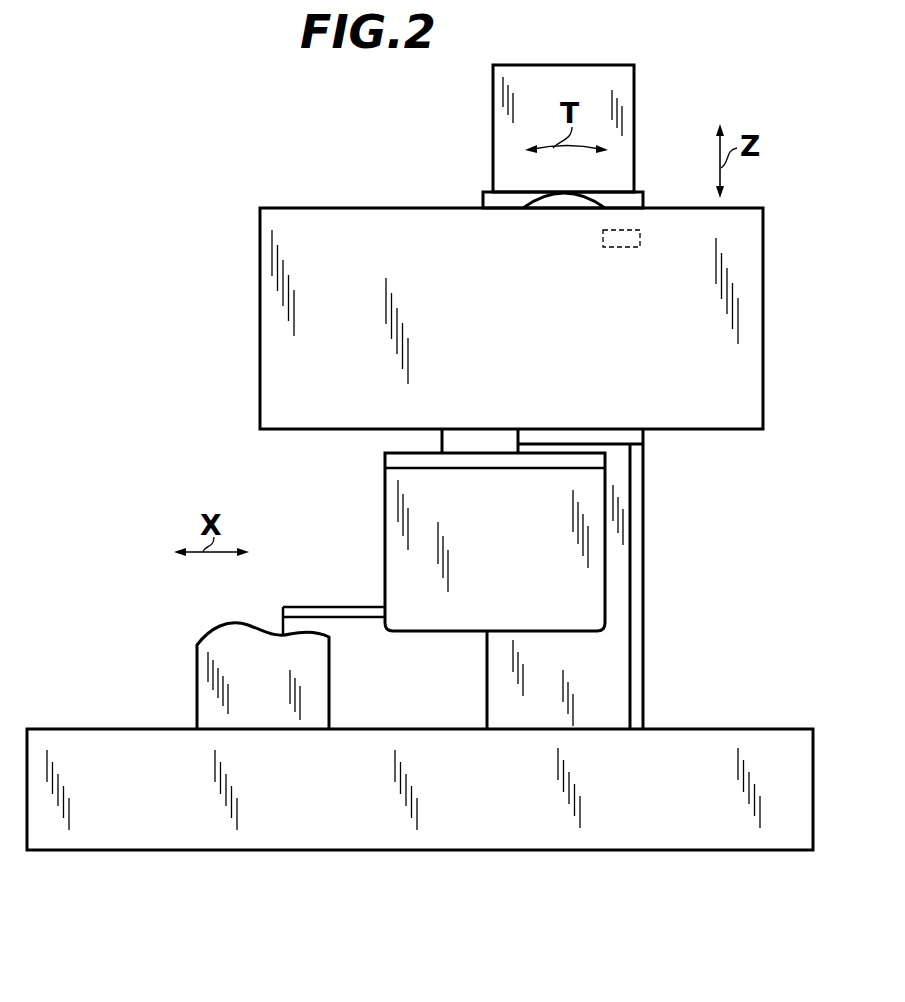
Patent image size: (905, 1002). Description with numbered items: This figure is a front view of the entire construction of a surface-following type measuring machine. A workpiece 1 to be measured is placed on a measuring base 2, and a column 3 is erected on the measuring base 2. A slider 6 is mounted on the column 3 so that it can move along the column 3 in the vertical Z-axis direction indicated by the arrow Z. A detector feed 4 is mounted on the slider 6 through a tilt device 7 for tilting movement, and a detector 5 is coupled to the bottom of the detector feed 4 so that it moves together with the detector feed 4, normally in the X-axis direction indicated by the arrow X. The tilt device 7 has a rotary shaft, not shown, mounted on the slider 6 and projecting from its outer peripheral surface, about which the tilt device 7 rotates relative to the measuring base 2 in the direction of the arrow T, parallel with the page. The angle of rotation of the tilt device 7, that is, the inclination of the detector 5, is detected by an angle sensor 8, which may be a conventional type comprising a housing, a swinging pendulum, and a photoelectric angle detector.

The workpiece 1 is at (197, 645).
The measuring base 2 is at (108, 729).
The column 3 is at (627, 102).
The detector feed 4 is at (763, 333).
The detector 5 is at (390, 548).
The slider 6 is at (637, 194).
The tilt device 7 is at (530, 198).
The angle sensor 8 is at (640, 232).